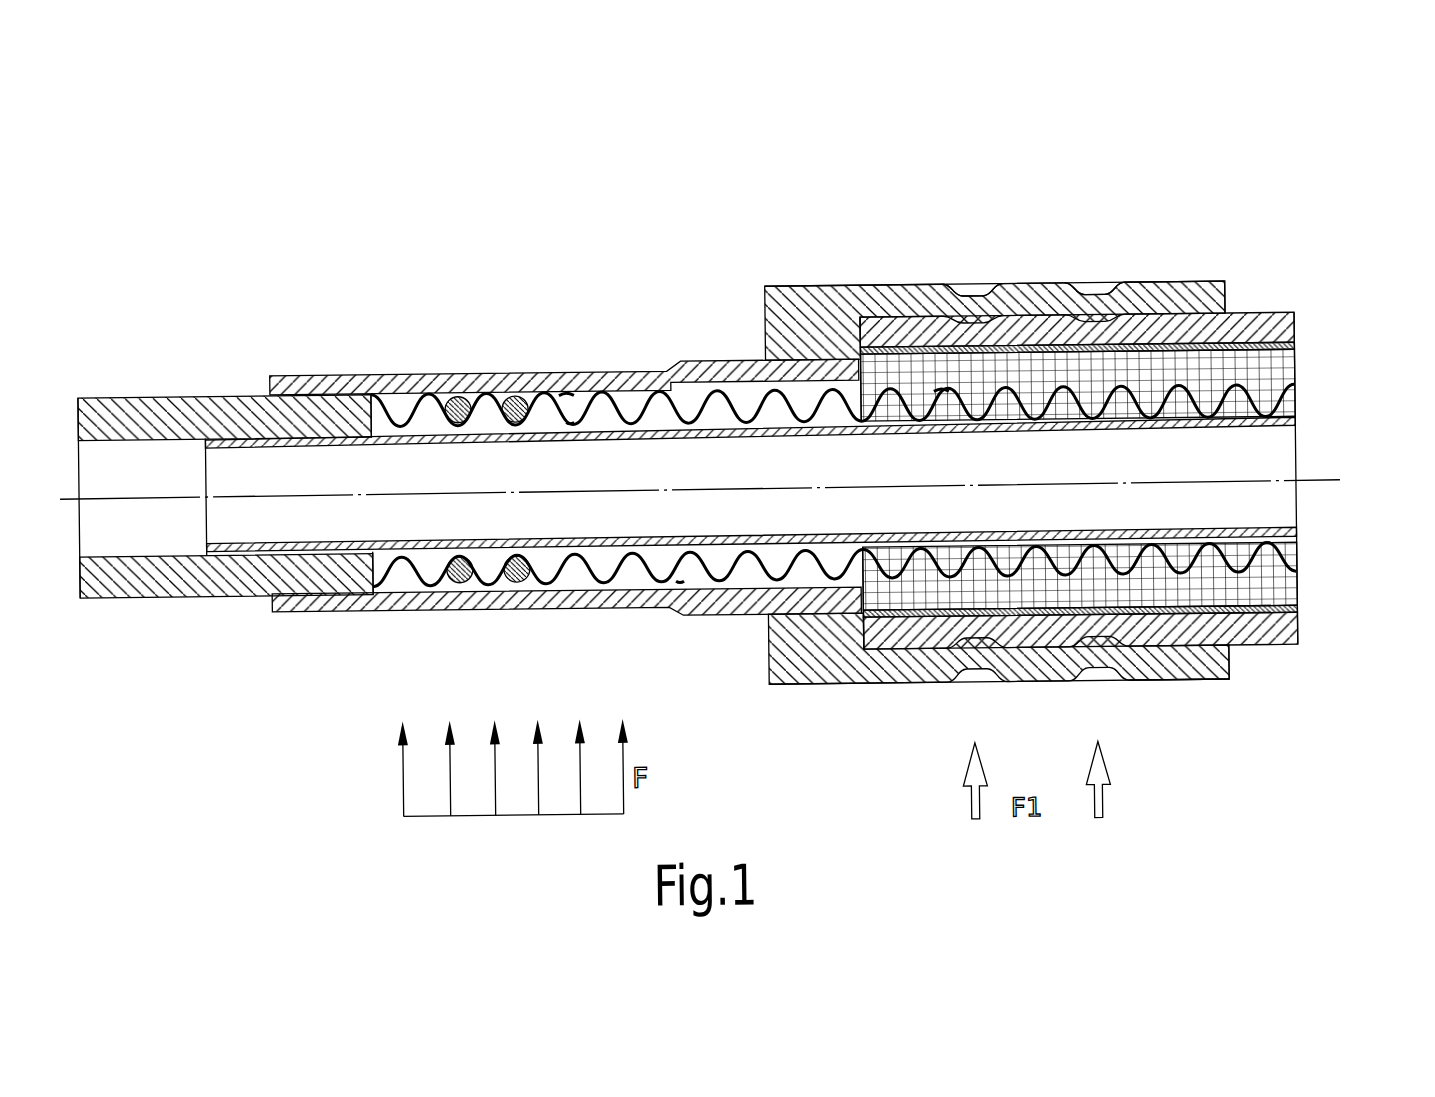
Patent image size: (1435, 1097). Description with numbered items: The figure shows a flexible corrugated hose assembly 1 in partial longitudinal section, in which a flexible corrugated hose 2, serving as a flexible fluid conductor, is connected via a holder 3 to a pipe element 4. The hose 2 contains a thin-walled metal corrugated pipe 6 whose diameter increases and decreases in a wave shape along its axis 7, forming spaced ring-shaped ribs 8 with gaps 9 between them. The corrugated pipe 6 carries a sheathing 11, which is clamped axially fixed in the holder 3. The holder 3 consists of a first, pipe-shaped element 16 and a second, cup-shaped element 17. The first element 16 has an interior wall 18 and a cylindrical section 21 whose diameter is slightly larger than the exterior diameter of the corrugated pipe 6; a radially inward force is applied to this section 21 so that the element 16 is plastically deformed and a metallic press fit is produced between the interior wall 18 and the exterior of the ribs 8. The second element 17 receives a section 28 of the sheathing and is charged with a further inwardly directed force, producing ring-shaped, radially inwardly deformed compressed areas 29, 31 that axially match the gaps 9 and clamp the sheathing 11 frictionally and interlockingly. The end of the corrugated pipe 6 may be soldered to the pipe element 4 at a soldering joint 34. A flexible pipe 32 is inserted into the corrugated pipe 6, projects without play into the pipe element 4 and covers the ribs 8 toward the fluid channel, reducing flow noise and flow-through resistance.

The flexible corrugated hose assembly 1 is at (1037, 224).
The flexible corrugated hose 2 is at (1334, 327).
The holder 3 is at (728, 280).
The pipe element 4 is at (168, 391).
The corrugated pipe 6 is at (1297, 398).
The axis 7 is at (1320, 491).
The ribs 8 is at (576, 392).
The gaps 9 is at (569, 395).
The sheathing 11 is at (1307, 570).
The first element 16 is at (512, 278).
The second element 17 is at (1186, 288).
The interior wall 18 is at (684, 586).
The cylindrical section 21 is at (371, 621).
The section of the sheathing 28 is at (866, 694).
The compressed area 29 is at (965, 286).
The compressed area 31 is at (1104, 285).
The flexible pipe 32 is at (1290, 539).
The soldering joint 34 is at (371, 389).